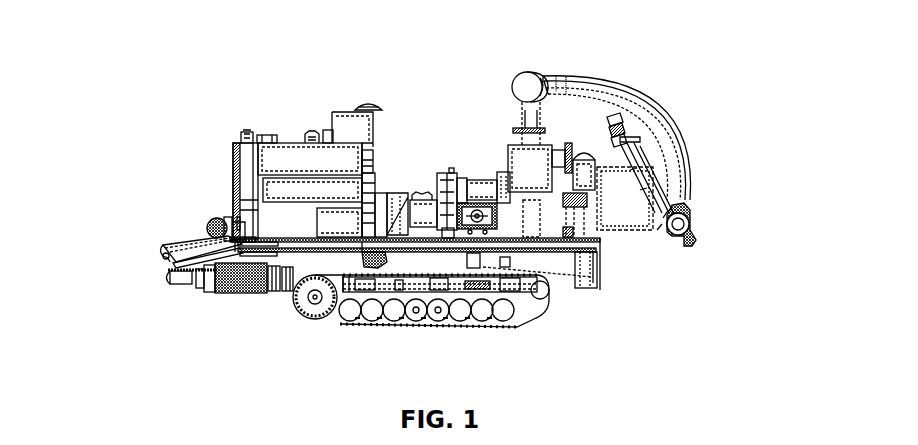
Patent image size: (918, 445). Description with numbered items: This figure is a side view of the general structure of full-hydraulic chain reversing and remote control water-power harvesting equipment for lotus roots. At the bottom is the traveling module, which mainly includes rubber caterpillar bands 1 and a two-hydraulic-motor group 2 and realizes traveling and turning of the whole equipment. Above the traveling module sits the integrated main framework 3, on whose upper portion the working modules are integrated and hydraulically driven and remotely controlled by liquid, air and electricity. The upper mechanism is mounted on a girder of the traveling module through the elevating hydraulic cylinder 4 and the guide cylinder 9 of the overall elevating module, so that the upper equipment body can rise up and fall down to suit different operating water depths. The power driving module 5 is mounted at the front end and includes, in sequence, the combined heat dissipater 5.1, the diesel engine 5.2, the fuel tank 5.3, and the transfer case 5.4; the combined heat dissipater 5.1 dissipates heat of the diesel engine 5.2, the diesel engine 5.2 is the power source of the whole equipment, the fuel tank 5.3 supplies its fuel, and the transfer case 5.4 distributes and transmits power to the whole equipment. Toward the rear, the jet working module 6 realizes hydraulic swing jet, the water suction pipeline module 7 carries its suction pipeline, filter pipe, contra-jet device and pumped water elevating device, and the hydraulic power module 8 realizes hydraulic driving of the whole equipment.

The rubber caterpillar bands 1 is at (335, 324).
The two-hydraulic-motor group 2 is at (295, 298).
The integrated main framework 3 is at (214, 229).
The elevating hydraulic cylinder 4 is at (368, 258).
The power driving module 5 is at (382, 43).
The combined heat dissipater 5.1 is at (233, 143).
The diesel engine 5.2 is at (307, 165).
The fuel tank 5.3 is at (312, 133).
The transfer case 5.4 is at (435, 176).
The jet working module 6 is at (533, 175).
The water suction pipeline module 7 is at (594, 158).
The hydraulic power module 8 is at (492, 214).
The guide cylinder 9 is at (512, 268).